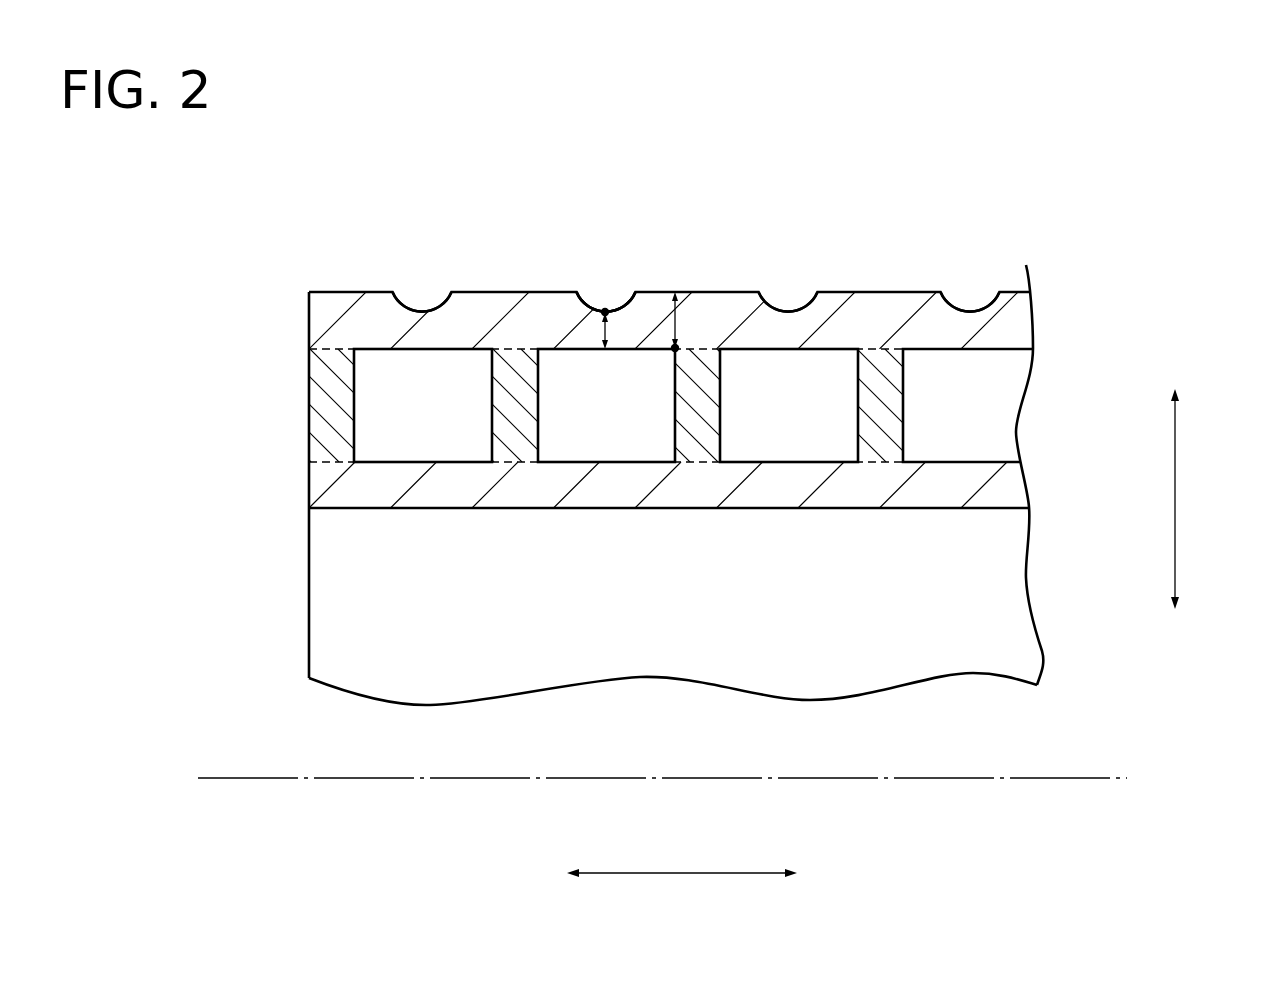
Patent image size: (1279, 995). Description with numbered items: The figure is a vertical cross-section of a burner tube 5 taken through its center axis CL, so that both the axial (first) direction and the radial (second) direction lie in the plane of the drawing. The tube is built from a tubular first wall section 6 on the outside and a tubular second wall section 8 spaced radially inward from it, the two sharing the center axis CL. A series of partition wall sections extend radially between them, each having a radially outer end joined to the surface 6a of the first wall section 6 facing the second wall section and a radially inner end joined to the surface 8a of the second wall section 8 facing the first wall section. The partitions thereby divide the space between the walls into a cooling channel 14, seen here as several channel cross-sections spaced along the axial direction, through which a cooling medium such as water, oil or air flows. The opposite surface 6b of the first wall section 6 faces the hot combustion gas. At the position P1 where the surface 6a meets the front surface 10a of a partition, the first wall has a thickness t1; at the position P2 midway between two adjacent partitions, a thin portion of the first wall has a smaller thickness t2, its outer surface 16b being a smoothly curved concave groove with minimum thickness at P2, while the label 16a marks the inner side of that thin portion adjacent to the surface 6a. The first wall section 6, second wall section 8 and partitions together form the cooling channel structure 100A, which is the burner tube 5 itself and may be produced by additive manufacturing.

The cooling channel structure 100A is at (980, 158).
The burner tube 5 is at (908, 120).
The first wall section 6 is at (334, 302).
The surface of the first wall section on the side of the second wall section 6a is at (628, 345).
The surface of the first wall section on the side opposite to the second wall sectio 6b is at (472, 290).
The second wall section 8 is at (608, 490).
The surface of the second wall section on the side of the first wall section 8a is at (620, 462).
The front surface of the partition wall section 10a is at (697, 412).
The cooling channel 14 is at (748, 367).
The groove side portion 16a is at (591, 349).
The surface of the thin portion on the side opposite to the second wall section 16b is at (593, 305).
The position P1 is at (679, 348).
The position P2 is at (606, 308).
The thickness t1 is at (676, 316).
The thickness t2 is at (609, 330).
The center axis CL is at (679, 778).